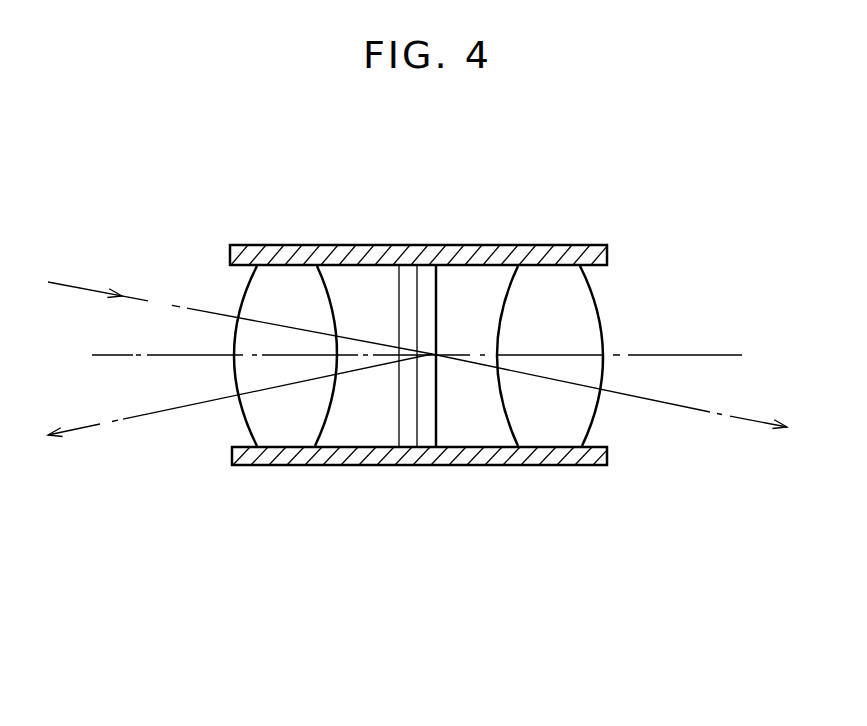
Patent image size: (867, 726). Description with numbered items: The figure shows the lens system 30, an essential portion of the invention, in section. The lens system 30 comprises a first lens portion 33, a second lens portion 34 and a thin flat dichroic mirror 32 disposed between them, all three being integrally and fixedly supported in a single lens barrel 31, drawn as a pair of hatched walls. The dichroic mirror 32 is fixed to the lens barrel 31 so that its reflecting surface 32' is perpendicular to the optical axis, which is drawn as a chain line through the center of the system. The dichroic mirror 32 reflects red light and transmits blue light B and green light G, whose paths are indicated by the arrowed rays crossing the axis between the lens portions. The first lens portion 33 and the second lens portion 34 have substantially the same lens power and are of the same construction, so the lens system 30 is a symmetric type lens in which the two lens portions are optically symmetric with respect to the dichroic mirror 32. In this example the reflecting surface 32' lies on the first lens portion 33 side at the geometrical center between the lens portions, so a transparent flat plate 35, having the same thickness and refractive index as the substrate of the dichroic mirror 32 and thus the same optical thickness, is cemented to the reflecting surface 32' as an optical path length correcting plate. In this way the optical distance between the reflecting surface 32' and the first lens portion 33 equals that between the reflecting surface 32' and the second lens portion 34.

The lens system 30 is at (436, 372).
The lens barrel 31 is at (560, 243).
The dichroic mirror 32 is at (481, 407).
The reflecting surface 32' is at (406, 447).
The first lens portion 33 is at (285, 430).
The second lens portion 34 is at (548, 428).
The transparent flat plate 35 is at (408, 377).
The blue light B is at (83, 427).
The green light G is at (752, 420).